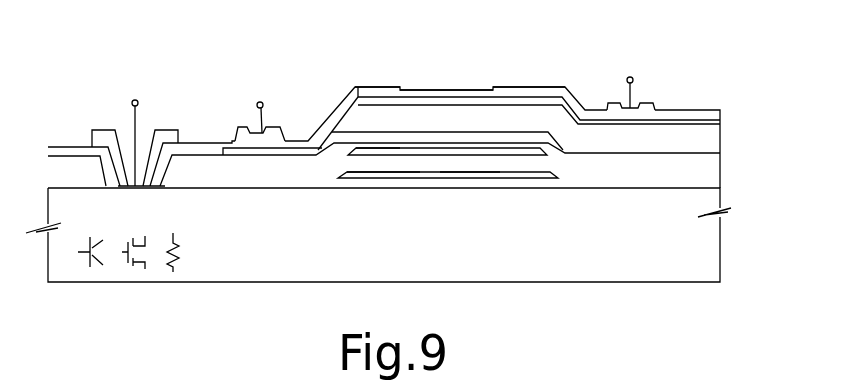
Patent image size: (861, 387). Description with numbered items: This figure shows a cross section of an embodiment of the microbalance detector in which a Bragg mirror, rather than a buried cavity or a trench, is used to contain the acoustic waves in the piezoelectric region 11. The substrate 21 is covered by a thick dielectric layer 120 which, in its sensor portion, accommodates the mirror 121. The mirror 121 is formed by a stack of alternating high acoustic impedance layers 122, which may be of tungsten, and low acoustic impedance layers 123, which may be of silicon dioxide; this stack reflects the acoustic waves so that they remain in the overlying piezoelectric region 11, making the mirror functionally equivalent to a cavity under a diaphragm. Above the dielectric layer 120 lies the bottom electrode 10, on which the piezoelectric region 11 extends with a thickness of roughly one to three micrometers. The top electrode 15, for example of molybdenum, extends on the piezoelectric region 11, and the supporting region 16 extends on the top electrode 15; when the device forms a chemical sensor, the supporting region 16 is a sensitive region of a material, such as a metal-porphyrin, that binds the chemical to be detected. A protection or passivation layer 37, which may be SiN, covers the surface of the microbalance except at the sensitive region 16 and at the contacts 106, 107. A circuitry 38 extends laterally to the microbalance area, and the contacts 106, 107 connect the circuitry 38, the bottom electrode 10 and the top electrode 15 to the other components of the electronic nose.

The substrate 21 is at (702, 271).
The thick dielectric layer 120 is at (703, 163).
The piezoelectric region 11 is at (710, 135).
The top electrode 15 is at (712, 120).
The contact 106 is at (118, 116).
The bottom electrode 10 is at (345, 133).
The protection layer 37 is at (345, 102).
The supporting region 16 is at (432, 91).
The contact 107 is at (644, 86).
The mirror 121 is at (555, 196).
The high acoustic impedance layers 122 is at (482, 155).
The low acoustic impedance layers 123 is at (409, 166).
The circuitry 38 is at (196, 232).